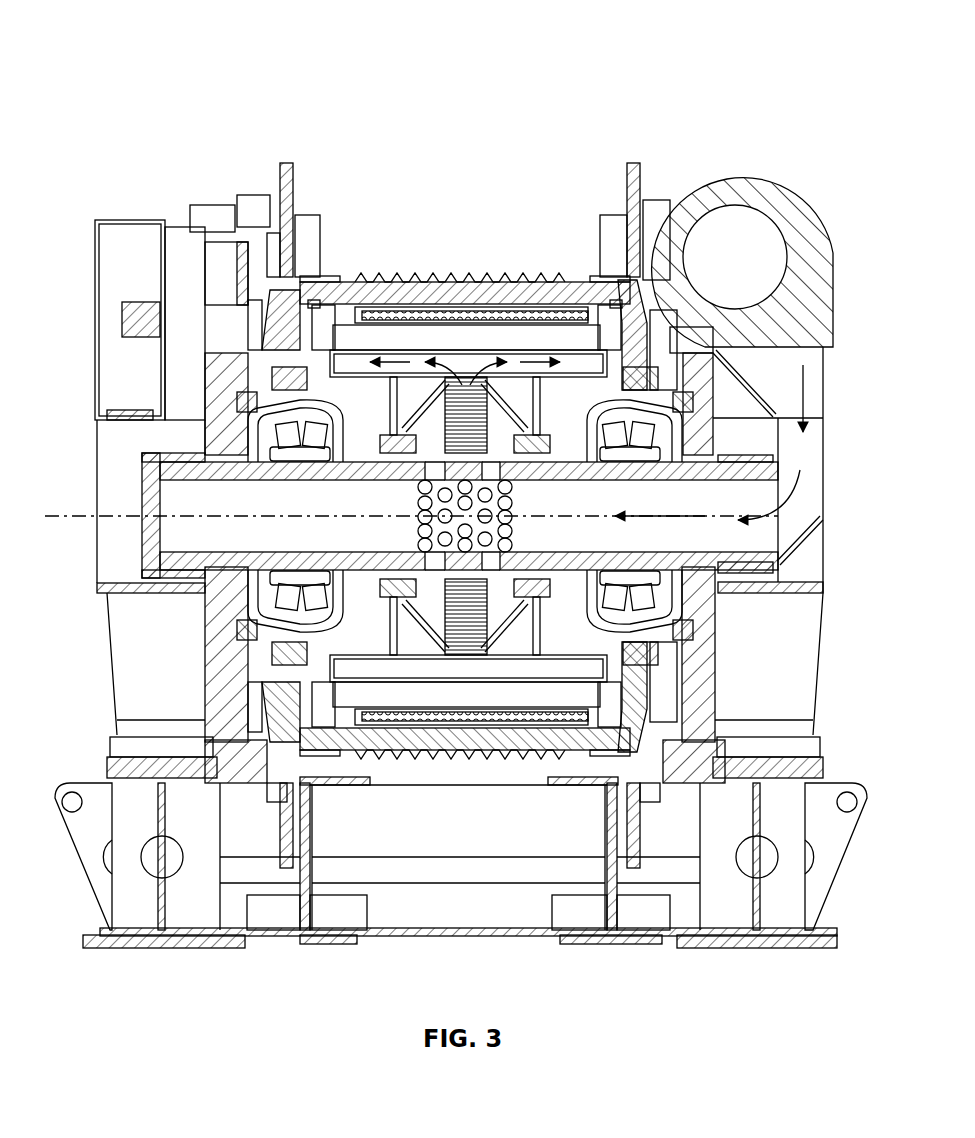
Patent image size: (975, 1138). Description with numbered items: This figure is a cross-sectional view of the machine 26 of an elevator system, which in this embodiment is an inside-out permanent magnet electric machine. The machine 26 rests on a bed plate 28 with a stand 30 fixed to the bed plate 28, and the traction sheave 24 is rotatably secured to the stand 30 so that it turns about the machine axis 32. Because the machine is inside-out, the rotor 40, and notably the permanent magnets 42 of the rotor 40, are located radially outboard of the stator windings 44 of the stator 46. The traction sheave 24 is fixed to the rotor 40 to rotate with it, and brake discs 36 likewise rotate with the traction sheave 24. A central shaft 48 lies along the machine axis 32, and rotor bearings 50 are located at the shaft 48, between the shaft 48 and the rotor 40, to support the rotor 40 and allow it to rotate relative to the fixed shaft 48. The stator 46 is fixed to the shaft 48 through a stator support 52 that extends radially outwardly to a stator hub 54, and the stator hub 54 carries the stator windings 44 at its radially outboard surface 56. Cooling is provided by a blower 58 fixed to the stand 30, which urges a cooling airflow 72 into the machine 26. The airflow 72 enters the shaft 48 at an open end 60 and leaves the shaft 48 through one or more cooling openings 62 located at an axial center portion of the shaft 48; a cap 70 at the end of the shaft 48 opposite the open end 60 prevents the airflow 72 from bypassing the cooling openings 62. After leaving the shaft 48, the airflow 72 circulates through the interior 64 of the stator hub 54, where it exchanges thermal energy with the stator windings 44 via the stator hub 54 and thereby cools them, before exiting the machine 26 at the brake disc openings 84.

The traction sheave 24 is at (457, 293).
The machine 26 is at (138, 50).
The bed plate 28 is at (87, 892).
The stand 30 is at (110, 642).
The machine axis 32 is at (117, 512).
The brake discs 36 is at (287, 163).
The rotor 40 is at (357, 314).
The permanent magnets 42 is at (402, 288).
The stator windings 44 is at (277, 268).
The stator 46 is at (345, 320).
The central shaft 48 is at (757, 573).
The rotor bearings 50 is at (262, 436).
The stator support 52 is at (277, 363).
The stator hub 54 is at (253, 353).
The radially outboard surface 56 is at (470, 437).
The blower 58 is at (738, 172).
The open end 60 is at (780, 572).
The cooling openings 62 is at (423, 528).
The interior 64 is at (715, 353).
The cap 70 is at (140, 535).
The cooling airflow 72 is at (808, 491).
The brake disc openings 84 is at (600, 280).